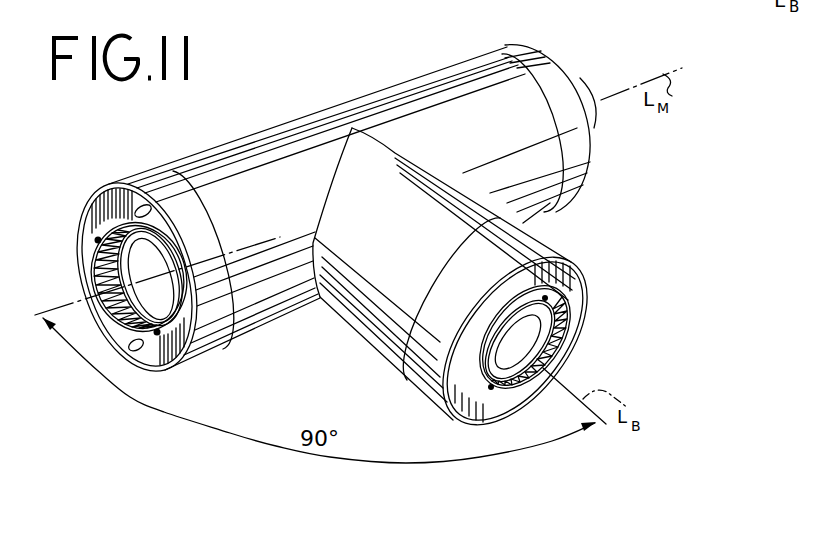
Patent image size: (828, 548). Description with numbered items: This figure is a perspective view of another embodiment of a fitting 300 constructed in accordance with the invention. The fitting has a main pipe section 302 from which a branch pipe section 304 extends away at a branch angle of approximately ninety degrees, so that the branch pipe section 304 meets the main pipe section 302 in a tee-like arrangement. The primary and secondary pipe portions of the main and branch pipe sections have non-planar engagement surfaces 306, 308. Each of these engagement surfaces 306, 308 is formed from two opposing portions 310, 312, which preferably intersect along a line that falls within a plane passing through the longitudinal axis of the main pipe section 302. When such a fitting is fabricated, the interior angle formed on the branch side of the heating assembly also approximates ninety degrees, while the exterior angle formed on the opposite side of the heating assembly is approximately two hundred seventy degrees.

The fitting 300 is at (474, 68).
The main pipe section 302 is at (284, 137).
The branch pipe section 304 is at (548, 238).
The non-planar engagement surface 306 is at (339, 165).
The non-planar engagement surface 308 is at (390, 150).
The opposing portion 310 is at (310, 247).
The opposing portion 312 is at (404, 150).